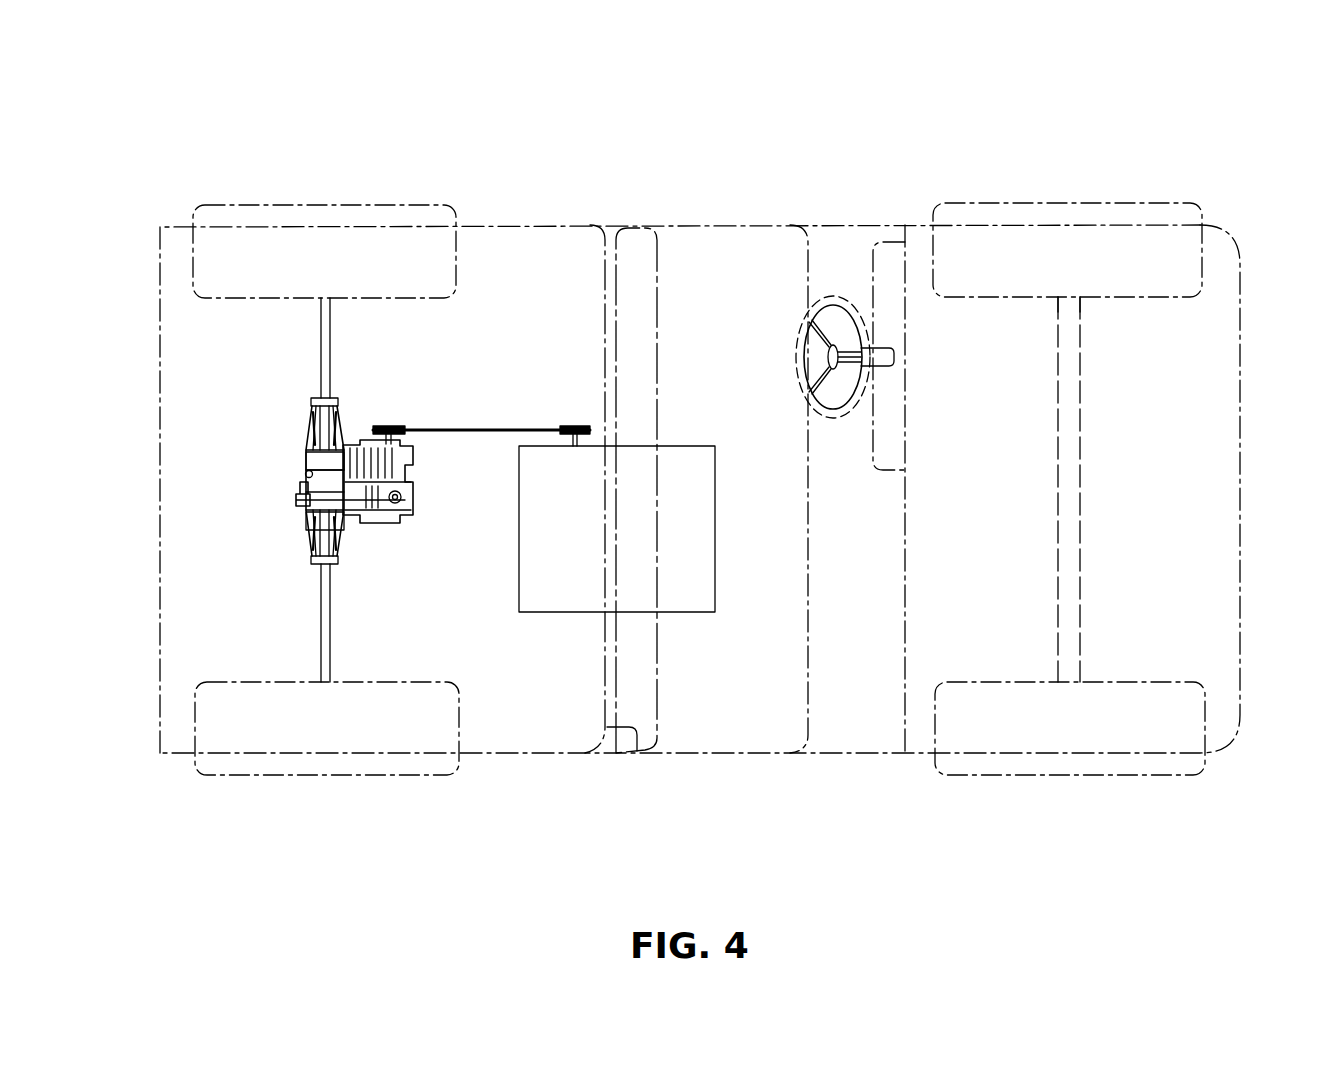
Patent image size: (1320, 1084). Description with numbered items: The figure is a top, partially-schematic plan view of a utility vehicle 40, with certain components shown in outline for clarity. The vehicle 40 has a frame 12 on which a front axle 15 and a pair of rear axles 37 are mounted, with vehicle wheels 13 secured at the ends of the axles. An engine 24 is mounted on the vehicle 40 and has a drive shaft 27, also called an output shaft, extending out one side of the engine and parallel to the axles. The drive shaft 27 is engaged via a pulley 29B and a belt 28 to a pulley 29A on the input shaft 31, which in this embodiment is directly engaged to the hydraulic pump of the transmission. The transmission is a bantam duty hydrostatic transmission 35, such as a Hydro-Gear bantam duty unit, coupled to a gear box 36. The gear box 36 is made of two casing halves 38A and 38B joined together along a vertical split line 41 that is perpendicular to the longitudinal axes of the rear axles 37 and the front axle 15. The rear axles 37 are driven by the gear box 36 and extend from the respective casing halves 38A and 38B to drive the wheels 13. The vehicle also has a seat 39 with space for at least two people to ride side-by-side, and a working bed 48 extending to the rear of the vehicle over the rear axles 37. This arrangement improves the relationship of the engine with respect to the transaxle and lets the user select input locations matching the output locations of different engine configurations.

The vehicle 40 is at (835, 150).
The frame 12 is at (520, 225).
The vehicle wheels 13 is at (322, 205).
The front axle 15 is at (1080, 488).
The engine 24 is at (617, 529).
The drive shaft 27 is at (592, 437).
The belt 28 is at (522, 428).
The pulley 29A is at (378, 424).
The pulley 29B is at (585, 425).
The input shaft 31 is at (396, 437).
The hydrostatic transmission 35 is at (412, 460).
The gear box 36 is at (315, 565).
The rear axles 37 is at (320, 336).
The casing half 38A is at (313, 462).
The casing half 38B is at (306, 533).
The seat 39 is at (657, 335).
The vertical split line 41 is at (296, 500).
The working bed 48 is at (637, 745).